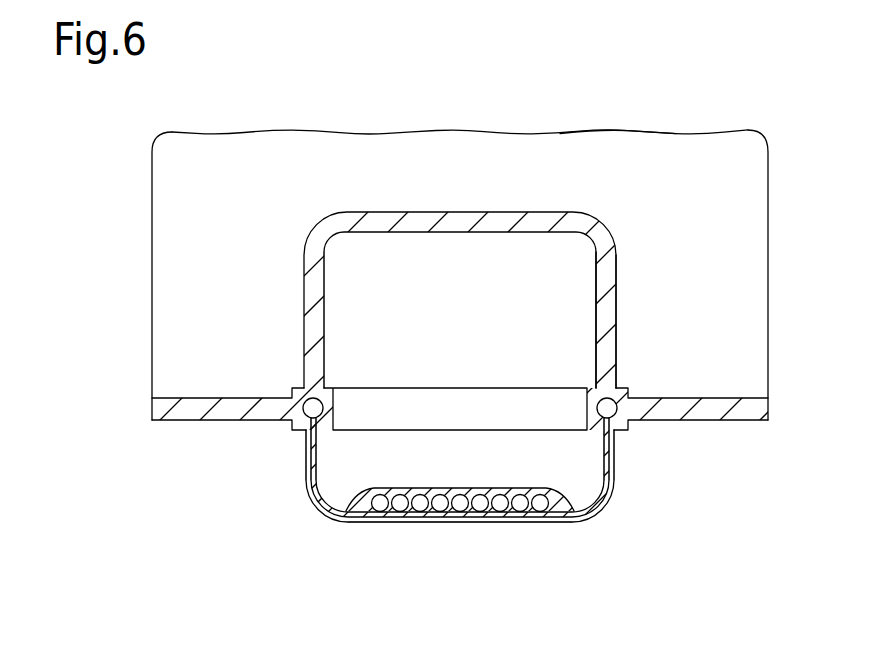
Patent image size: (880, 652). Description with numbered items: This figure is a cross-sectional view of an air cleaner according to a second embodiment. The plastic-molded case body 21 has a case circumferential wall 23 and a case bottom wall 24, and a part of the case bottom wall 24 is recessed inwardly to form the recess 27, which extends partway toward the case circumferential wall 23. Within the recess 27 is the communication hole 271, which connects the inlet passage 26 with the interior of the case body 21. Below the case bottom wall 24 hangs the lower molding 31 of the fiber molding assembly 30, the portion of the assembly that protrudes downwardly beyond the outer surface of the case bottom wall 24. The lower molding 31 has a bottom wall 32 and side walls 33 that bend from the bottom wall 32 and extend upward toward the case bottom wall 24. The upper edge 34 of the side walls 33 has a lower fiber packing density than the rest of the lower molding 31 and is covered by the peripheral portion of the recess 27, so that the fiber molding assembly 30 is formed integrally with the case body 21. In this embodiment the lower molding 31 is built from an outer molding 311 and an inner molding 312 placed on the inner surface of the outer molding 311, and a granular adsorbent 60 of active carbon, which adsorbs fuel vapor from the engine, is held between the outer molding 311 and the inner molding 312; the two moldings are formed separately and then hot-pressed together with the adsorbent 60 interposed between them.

The case body 21 is at (197, 152).
The case circumferential wall 23 is at (655, 137).
The case bottom wall 24 is at (200, 421).
The inlet passage 26 is at (378, 286).
The recess 27 is at (485, 280).
The communication hole 271 is at (594, 307).
The upper edge of the side walls 34 is at (331, 398).
The side walls 33 is at (578, 472).
The bottom wall 32 is at (452, 522).
The adsorbent 60 is at (436, 519).
The outer molding 311 is at (553, 528).
The inner molding 312 is at (597, 507).
The lower molding 31 is at (440, 326).
The fiber molding assembly 30 is at (501, 576).